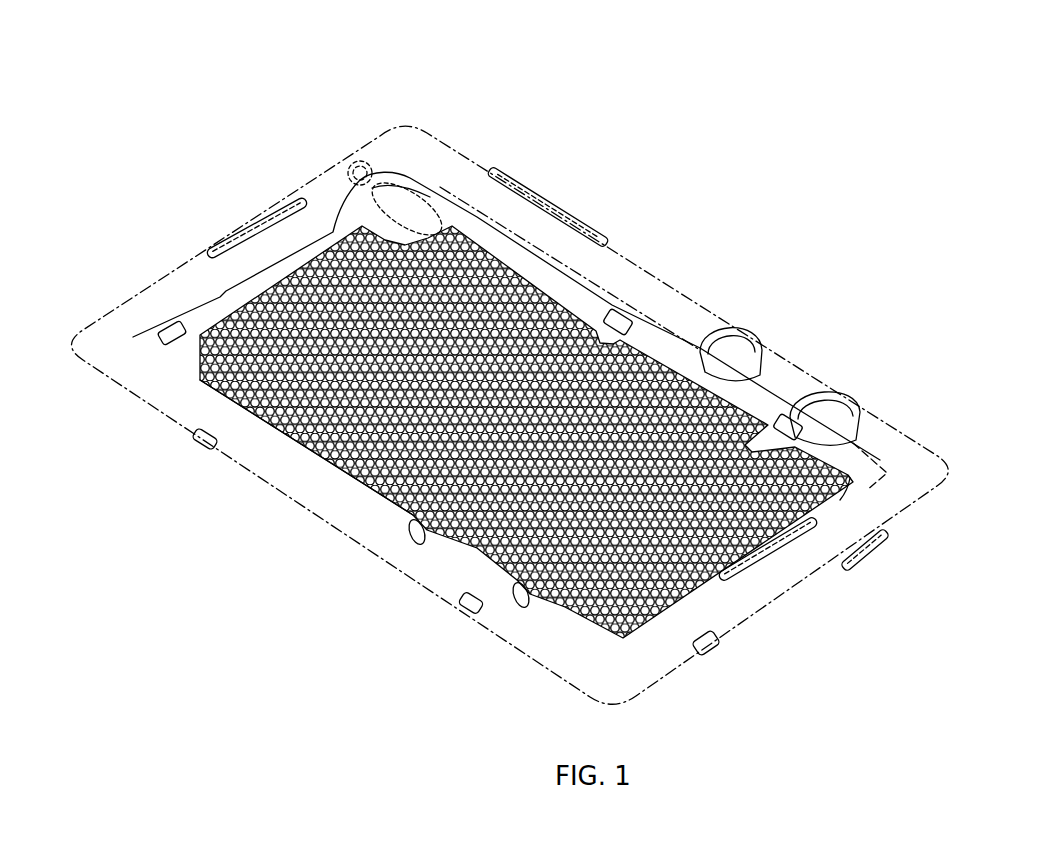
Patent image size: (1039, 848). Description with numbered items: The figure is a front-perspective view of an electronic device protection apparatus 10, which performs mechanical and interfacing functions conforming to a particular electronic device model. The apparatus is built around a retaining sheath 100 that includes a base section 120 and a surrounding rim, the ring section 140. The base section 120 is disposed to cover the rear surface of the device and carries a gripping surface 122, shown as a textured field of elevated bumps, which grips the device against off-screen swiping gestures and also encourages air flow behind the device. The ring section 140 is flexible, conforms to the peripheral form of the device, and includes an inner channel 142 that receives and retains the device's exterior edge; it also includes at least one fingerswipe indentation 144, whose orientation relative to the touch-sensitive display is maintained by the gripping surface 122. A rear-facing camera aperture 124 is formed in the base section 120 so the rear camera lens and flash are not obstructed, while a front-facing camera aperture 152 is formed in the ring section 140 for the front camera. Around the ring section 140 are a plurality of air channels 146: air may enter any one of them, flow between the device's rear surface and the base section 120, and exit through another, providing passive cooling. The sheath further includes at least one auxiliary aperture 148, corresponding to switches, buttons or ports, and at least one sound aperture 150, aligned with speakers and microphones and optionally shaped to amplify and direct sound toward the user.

The electronic device protection apparatus 10 is at (480, 112).
The retaining sheath 100 is at (618, 245).
The base section 120 is at (430, 197).
The gripping surface 122 is at (330, 455).
The rear-facing camera aperture 124 is at (383, 213).
The ring section 140 is at (327, 493).
The inner channel 142 is at (853, 462).
The fingerswipe indentation 144 is at (735, 342).
The air channels 146 is at (160, 327).
The auxiliary aperture 148 is at (547, 207).
The sound aperture 150 is at (258, 214).
The front-facing camera aperture 152 is at (354, 162).